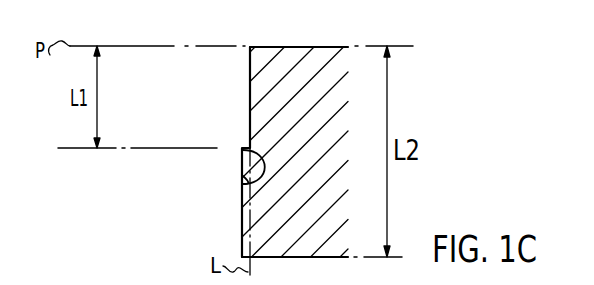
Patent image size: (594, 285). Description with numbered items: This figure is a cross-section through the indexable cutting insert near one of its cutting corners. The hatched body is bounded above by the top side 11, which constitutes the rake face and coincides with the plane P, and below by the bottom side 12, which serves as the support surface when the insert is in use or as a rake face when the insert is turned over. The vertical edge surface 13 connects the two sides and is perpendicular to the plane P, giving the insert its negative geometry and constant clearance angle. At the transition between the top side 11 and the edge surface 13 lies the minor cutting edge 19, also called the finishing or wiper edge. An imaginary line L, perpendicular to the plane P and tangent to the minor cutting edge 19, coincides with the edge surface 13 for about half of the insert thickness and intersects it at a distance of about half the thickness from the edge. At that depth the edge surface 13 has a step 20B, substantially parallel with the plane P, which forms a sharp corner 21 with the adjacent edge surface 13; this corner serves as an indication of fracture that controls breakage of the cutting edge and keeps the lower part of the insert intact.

The top side 11 is at (296, 46).
The bottom side 12 is at (308, 257).
The edge surface 13 is at (210, 158).
The minor cutting edge 19 is at (250, 47).
The step 20B is at (249, 148).
The sharp corner 21 is at (252, 184).